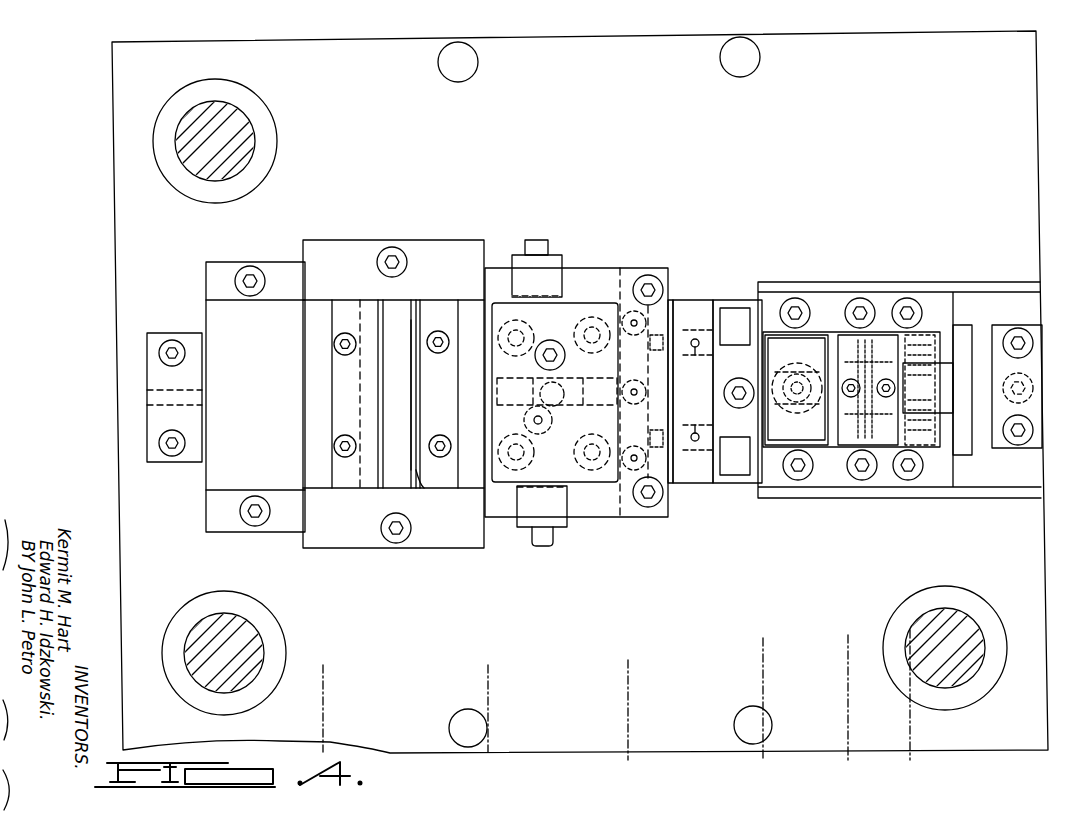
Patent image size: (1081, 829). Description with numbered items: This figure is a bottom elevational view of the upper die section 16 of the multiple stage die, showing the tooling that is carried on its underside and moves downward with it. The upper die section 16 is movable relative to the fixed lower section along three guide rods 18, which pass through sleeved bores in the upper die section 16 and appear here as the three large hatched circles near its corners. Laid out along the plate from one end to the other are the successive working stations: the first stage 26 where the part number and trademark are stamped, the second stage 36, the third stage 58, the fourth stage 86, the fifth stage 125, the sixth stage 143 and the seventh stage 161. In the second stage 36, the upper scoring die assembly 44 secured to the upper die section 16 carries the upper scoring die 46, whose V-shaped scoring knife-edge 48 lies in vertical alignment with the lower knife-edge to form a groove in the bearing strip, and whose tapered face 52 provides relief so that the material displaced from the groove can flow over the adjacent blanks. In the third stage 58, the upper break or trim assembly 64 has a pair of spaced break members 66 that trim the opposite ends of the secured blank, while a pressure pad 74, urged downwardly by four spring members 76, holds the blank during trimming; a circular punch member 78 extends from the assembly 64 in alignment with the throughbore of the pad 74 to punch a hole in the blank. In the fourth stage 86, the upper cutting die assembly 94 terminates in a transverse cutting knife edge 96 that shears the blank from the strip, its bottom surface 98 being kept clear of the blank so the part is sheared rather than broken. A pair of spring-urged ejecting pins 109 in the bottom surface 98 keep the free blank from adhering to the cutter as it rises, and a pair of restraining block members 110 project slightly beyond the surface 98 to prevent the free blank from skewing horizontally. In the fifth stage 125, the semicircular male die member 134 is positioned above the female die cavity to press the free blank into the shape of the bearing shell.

The upper die section 16 is at (97, 265).
The guide rods 18 is at (213, 113).
The upper scoring die assembly 44 is at (340, 303).
The upper scoring die 46 is at (397, 300).
The V-shaped scoring knife-edge 48 is at (418, 478).
The tapered face 52 is at (398, 395).
The upper break or trim assembly 64 is at (607, 268).
The break members 66 is at (511, 258).
The pressure pad 74 is at (605, 482).
The spring members 76 is at (580, 334).
The circular punch member 78 is at (538, 417).
The upper cutting die assembly 94 is at (709, 300).
The cutting knife edge 96 is at (671, 318).
The bottom surface 98 is at (703, 482).
The ejecting pins 109 is at (695, 432).
The restraining block members 110 is at (737, 310).
The male die member 134 is at (810, 338).
The first stage 26 is at (321, 725).
The second stage 36 is at (486, 725).
The third stage 58 is at (626, 725).
The fourth stage 86 is at (761, 724).
The fifth stage 125 is at (846, 724).
The sixth stage 143 is at (908, 724).
The seventh stage 161 is at (1045, 724).